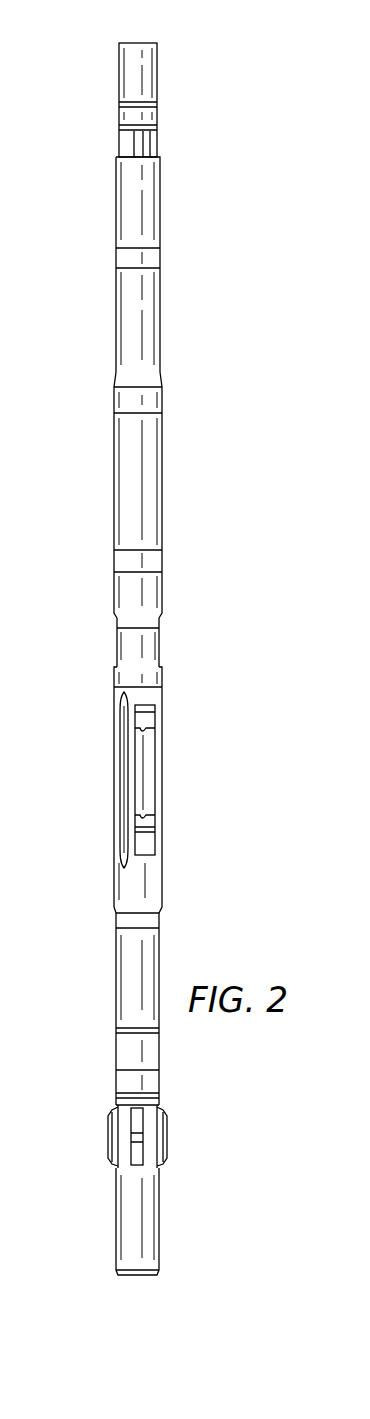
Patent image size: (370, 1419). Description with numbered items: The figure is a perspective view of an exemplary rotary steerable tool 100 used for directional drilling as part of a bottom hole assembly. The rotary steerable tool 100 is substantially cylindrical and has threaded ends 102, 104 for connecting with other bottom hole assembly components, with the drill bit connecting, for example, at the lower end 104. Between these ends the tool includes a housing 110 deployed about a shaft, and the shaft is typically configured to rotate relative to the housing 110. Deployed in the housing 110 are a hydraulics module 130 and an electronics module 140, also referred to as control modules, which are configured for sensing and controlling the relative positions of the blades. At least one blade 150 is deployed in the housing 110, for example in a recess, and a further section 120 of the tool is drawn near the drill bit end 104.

The downhole tool assembly 100 is at (237, 388).
The upper end 102 is at (137, 43).
The lower end 104 is at (138, 1277).
The tubular section 110 is at (160, 205).
The centralizer / slotted sub 120 is at (165, 1138).
The housing section 130 is at (113, 432).
The housing 140 is at (166, 477).
The window / slotted section 150 is at (148, 790).